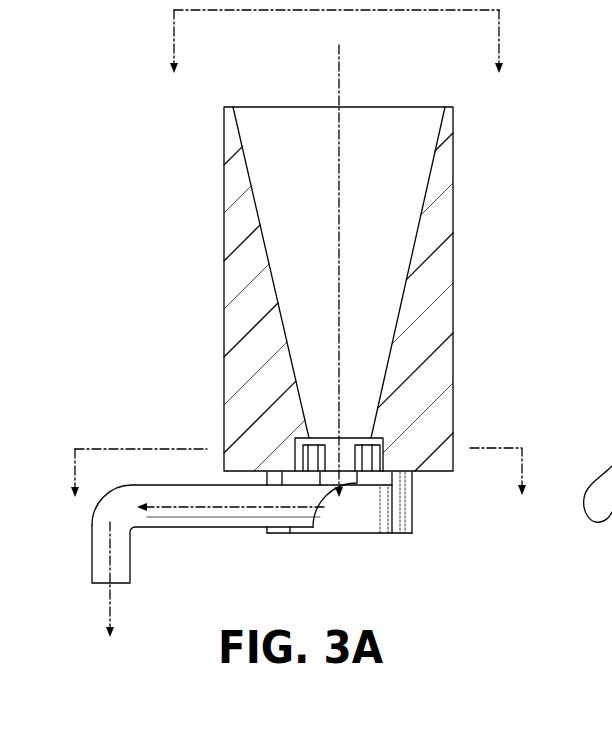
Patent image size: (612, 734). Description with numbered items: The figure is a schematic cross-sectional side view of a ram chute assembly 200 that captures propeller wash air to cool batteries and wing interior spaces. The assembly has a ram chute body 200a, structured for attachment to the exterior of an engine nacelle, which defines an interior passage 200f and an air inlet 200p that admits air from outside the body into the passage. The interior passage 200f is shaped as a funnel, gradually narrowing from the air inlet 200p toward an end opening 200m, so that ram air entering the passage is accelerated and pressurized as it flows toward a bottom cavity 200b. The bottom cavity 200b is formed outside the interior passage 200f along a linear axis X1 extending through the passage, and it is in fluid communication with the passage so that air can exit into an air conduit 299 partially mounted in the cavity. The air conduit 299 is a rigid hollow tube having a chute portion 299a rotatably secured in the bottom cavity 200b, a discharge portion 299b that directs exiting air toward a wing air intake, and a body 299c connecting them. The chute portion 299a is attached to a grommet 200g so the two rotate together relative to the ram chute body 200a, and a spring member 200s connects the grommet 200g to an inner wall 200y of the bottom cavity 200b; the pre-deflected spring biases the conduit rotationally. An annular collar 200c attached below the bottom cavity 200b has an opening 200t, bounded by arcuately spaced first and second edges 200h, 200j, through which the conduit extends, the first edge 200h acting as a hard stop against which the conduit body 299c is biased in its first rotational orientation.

The ram chute assembly 200 is at (150, 181).
The ram chute body 200a is at (440, 248).
The interior passage 200f is at (297, 125).
The air inlet 200p is at (362, 125).
The linear axis X1 is at (340, 217).
The end opening 200m is at (330, 436).
The grommet 200g is at (296, 437).
The bottom cavity 200b is at (379, 436).
The inner wall 200y is at (381, 457).
The spring member 200s is at (384, 463).
The air conduit 299 is at (213, 529).
The chute portion 299a is at (320, 487).
The discharge portion 299b is at (100, 562).
The body 299c is at (178, 519).
The first edge 200h is at (283, 534).
The opening 200t is at (363, 521).
The annular collar 200c is at (412, 506).
The second edge 200j is at (395, 534).